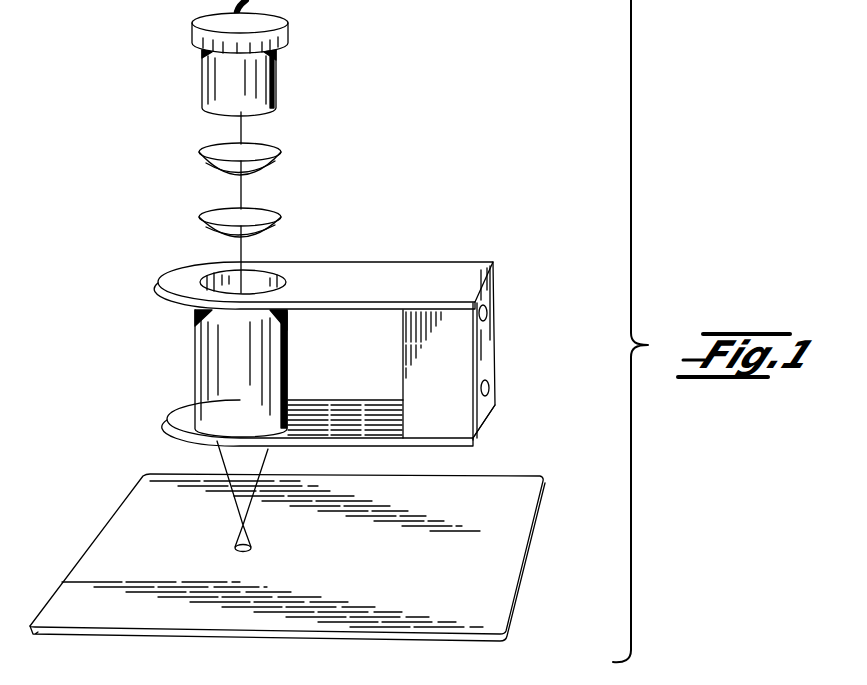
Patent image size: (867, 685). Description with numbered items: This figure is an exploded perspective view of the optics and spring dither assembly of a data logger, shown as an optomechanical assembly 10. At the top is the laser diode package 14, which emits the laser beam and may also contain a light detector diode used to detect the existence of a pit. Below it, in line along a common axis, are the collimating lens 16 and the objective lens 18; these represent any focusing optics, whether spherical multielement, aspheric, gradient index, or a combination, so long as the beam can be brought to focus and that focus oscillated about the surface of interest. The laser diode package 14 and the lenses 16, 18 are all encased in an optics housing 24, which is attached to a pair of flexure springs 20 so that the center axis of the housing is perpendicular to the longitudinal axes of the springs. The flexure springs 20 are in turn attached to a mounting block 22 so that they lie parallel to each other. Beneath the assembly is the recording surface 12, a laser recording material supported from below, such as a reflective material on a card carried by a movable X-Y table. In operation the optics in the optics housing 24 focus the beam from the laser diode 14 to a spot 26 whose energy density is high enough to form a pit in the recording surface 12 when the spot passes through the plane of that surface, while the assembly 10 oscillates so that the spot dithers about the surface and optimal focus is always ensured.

The optomechanical assembly 10 is at (443, 234).
The recording surface 12 is at (513, 563).
The laser diode package 14 is at (272, 75).
The collimating lens 16 is at (282, 157).
The objective lens 18 is at (282, 222).
The flexure springs 20 is at (160, 283).
The mounting block 22 is at (487, 360).
The optics housing 24 is at (190, 365).
The spot 26 is at (238, 523).